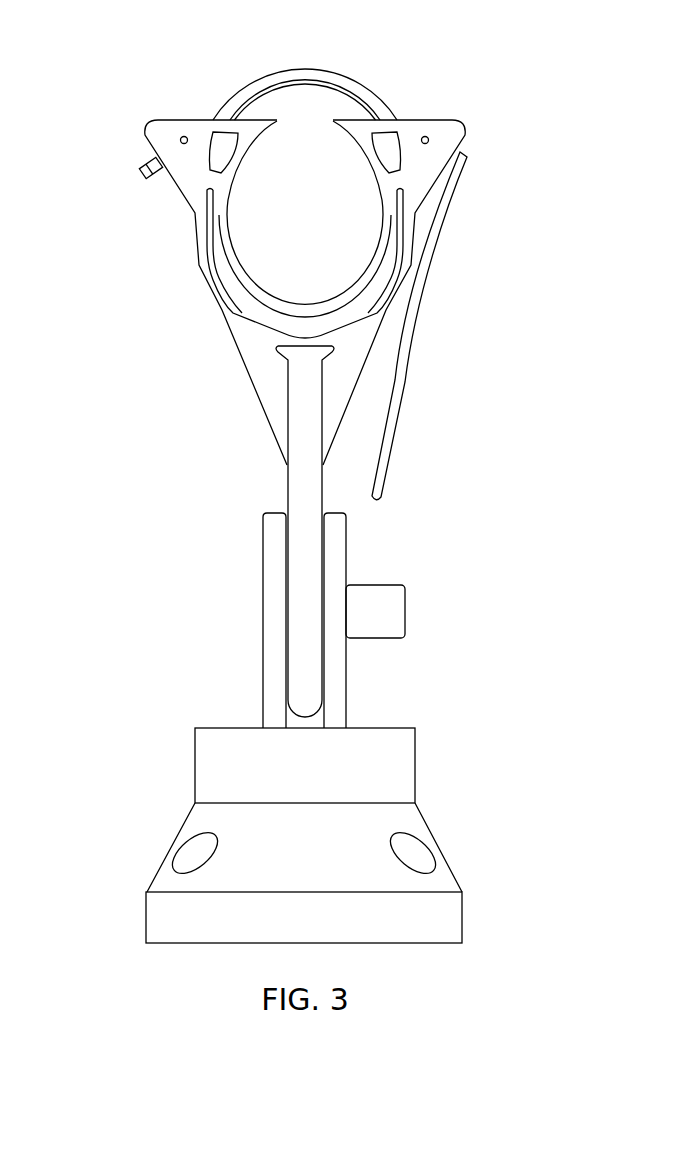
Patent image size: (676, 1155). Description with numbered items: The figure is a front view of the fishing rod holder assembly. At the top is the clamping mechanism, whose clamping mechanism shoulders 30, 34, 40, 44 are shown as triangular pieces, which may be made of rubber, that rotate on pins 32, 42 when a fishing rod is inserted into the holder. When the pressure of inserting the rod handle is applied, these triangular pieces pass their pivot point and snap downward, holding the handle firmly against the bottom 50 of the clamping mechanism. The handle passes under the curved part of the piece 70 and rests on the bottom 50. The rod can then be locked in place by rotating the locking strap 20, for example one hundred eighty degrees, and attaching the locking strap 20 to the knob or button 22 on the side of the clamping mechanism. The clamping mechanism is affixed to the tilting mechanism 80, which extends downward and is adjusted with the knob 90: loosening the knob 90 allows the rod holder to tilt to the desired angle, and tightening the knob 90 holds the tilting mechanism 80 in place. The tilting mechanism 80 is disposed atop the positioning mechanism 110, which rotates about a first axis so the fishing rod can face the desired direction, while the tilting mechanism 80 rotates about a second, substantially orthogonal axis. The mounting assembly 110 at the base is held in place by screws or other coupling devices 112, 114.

The locking strap 20 is at (400, 365).
The knob or button 22 is at (142, 176).
The clamping mechanism shoulder 30 is at (404, 133).
The pin 32 is at (425, 136).
The clamping mechanism shoulder 34 is at (395, 182).
The clamping mechanism shoulder 40 is at (205, 133).
The pin 42 is at (184, 136).
The clamping mechanism shoulder 44 is at (215, 182).
The bottom of the clamping mechanism 50 is at (268, 297).
The curved piece 70 is at (358, 82).
The tilting mechanism 80 is at (323, 482).
The knob 90 is at (405, 610).
The positioning mechanism / mounting assembly 110 is at (415, 765).
The coupling device 112 is at (420, 852).
The coupling device 114 is at (188, 852).